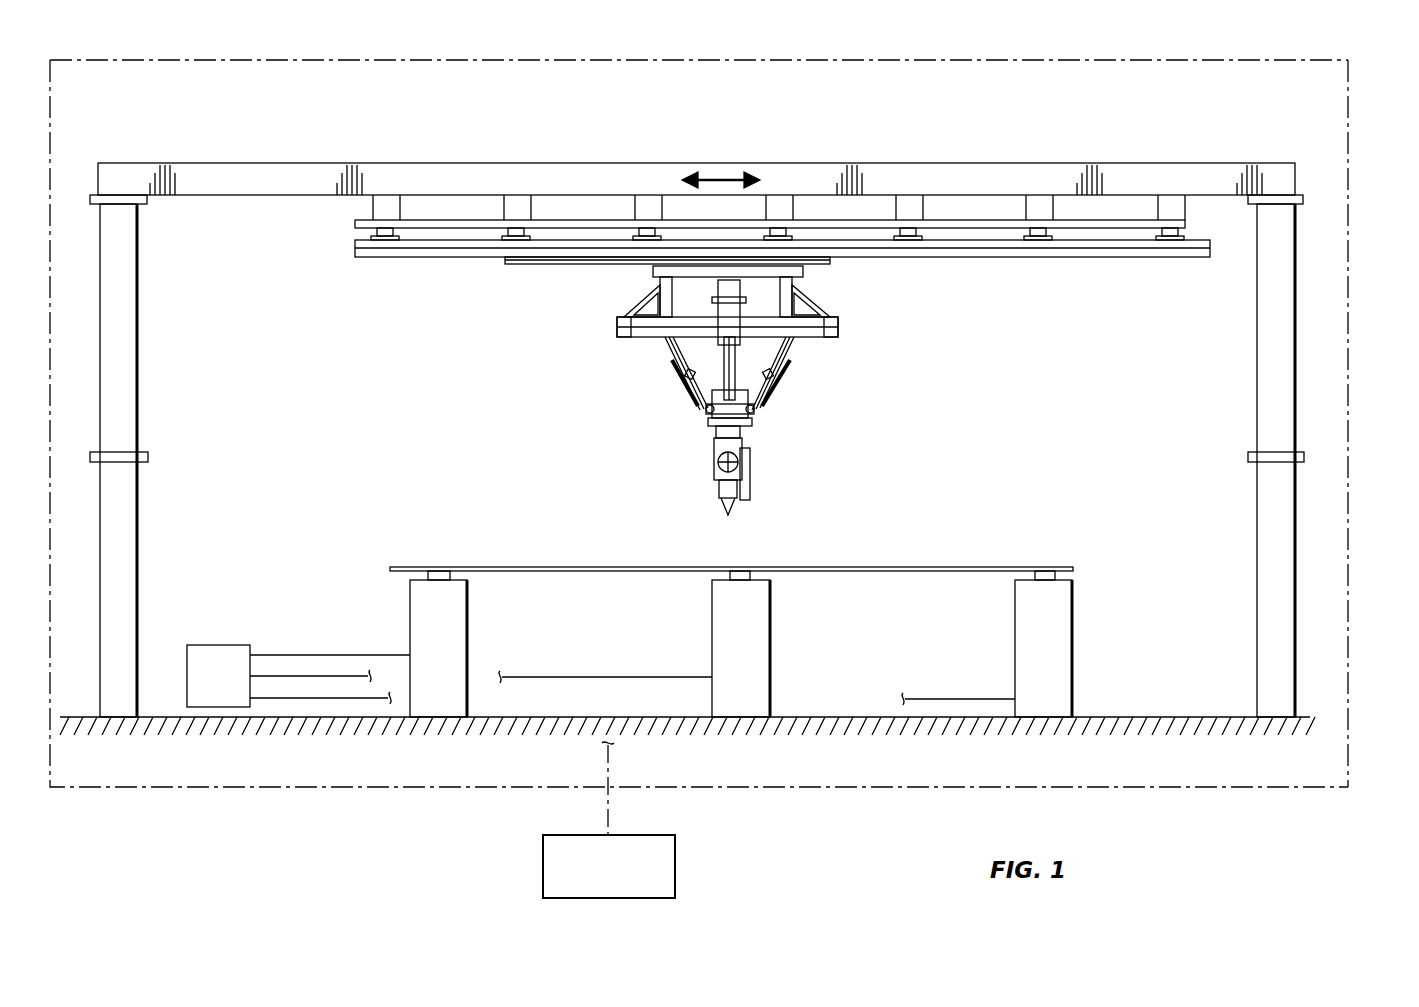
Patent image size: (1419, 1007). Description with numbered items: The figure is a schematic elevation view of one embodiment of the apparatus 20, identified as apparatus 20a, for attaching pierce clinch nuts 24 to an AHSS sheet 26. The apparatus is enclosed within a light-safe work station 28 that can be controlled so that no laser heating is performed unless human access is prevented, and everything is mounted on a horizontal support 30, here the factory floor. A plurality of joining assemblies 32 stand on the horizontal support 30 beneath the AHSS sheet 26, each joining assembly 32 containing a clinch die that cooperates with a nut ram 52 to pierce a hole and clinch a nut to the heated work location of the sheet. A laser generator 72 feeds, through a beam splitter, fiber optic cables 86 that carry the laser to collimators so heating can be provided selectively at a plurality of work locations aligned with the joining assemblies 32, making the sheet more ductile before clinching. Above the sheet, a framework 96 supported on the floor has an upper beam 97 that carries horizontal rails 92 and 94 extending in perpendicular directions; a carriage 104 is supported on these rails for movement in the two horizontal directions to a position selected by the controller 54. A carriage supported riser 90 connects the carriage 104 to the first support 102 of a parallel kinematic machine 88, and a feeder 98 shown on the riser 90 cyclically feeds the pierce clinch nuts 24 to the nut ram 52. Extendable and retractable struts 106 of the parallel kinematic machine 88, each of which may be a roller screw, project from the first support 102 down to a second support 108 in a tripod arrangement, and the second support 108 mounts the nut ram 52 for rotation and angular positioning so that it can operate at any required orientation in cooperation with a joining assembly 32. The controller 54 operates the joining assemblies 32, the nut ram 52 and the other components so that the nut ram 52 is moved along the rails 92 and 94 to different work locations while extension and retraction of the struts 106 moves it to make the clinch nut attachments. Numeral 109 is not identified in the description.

The apparatus 20 is at (725, 390).
The apparatus embodiment 20a is at (838, 372).
The clinch nut 24 is at (1352, 287).
The AHSS sheet 26 is at (920, 567).
The light-safe work station 28 is at (645, 50).
The horizontal support 30 is at (323, 717).
The joining assembly 32 is at (472, 636).
The nut ram 52 is at (710, 490).
The controller 54 is at (543, 865).
The laser generator 72 is at (220, 645).
The fiber optic cables 86 is at (300, 698).
The parallel kinematic machine 88 is at (725, 313).
The carriage supported riser 90 is at (816, 292).
The horizontal rail 92 is at (385, 229).
The horizontal rail 94 is at (358, 257).
The framework 96 is at (785, 162).
The upper beam 97 is at (650, 182).
The feeder 98 is at (690, 287).
The first support 102 is at (842, 326).
The carriage 104 is at (655, 266).
The struts 106 is at (668, 350).
The second support 108 is at (750, 424).
The arm actuator 109 is at (680, 392).